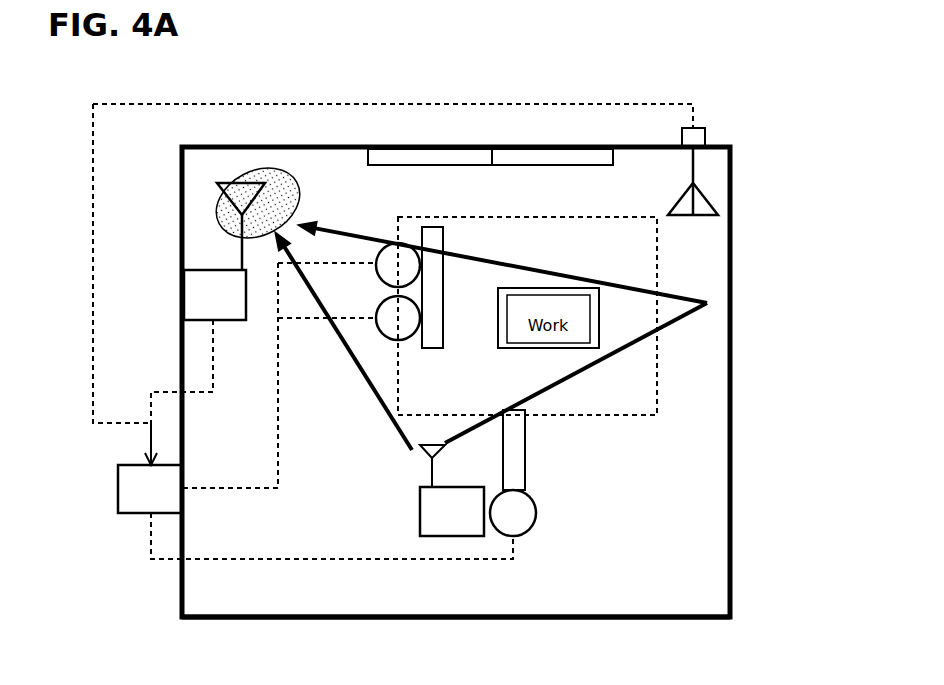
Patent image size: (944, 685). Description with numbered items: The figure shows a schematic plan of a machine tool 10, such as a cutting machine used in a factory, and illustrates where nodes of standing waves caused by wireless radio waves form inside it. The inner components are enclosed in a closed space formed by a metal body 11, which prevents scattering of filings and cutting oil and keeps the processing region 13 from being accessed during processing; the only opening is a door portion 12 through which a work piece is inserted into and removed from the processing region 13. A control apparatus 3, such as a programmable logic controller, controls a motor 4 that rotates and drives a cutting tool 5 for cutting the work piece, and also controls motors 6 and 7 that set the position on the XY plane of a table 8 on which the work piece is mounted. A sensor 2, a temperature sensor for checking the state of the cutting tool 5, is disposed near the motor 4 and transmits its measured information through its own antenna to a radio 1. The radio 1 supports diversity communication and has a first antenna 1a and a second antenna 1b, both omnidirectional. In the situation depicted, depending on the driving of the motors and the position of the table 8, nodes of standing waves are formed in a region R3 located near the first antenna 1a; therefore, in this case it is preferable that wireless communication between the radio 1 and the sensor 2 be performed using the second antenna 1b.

The radio 1 is at (185, 295).
The first antenna 1a is at (242, 256).
The second antenna 1b is at (693, 172).
The sensor 2 is at (420, 515).
The control apparatus 3 is at (118, 478).
The motor 4 is at (530, 530).
The cutting tool 5 is at (525, 440).
The motor 6 is at (377, 306).
The motor 7 is at (395, 246).
The table 8 is at (433, 226).
The machine tool 10 is at (765, 525).
The body 11 is at (367, 619).
The door portion 12 is at (571, 147).
The processing region 13 is at (657, 372).
The region R3 is at (292, 172).